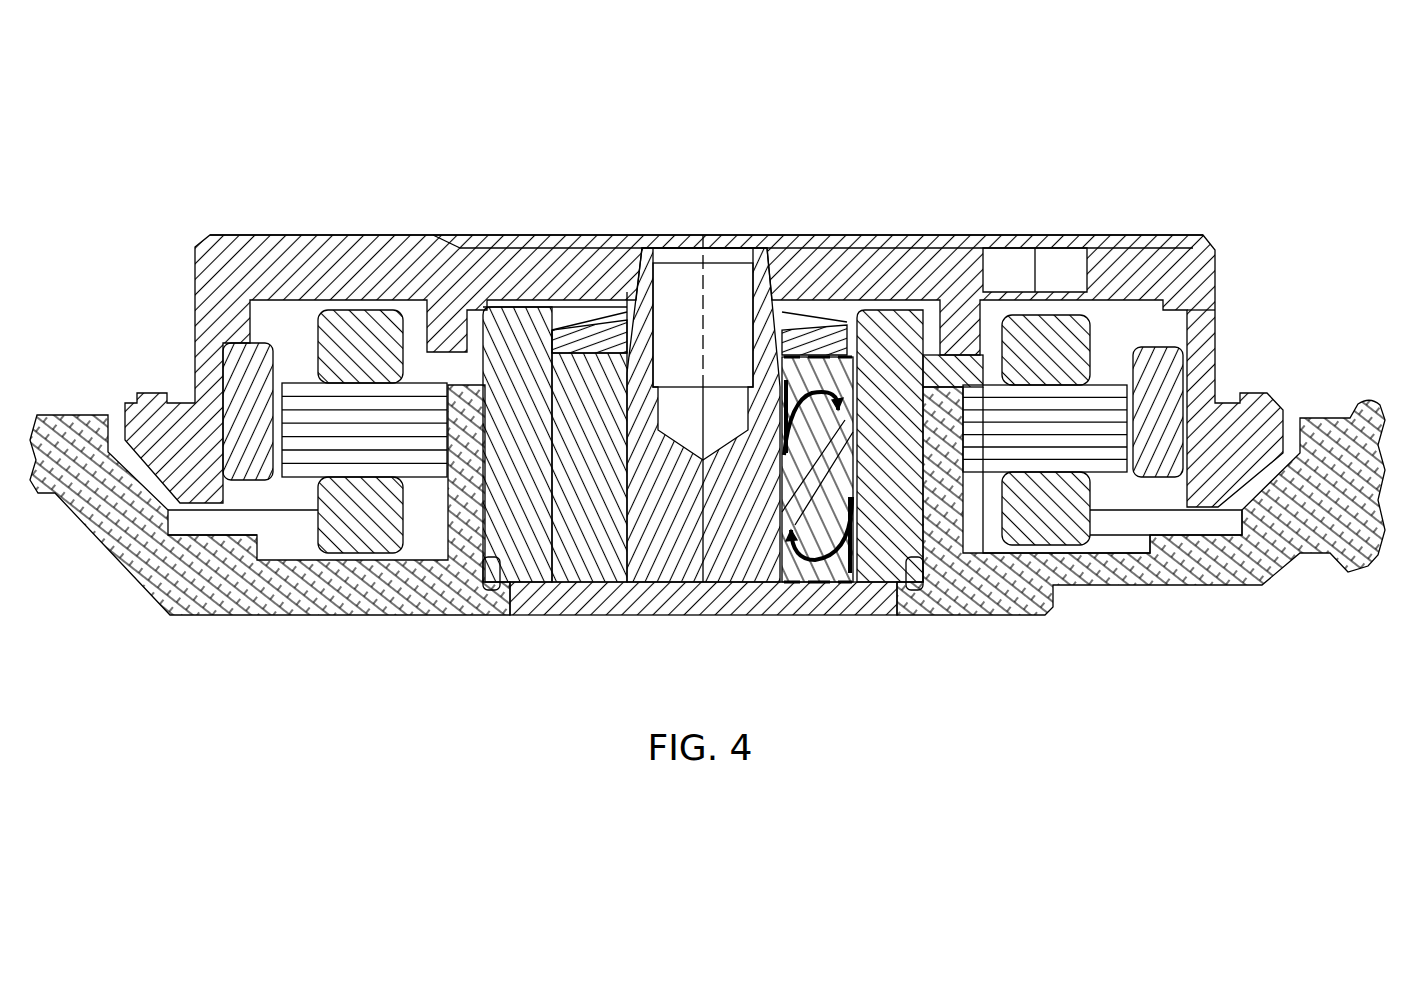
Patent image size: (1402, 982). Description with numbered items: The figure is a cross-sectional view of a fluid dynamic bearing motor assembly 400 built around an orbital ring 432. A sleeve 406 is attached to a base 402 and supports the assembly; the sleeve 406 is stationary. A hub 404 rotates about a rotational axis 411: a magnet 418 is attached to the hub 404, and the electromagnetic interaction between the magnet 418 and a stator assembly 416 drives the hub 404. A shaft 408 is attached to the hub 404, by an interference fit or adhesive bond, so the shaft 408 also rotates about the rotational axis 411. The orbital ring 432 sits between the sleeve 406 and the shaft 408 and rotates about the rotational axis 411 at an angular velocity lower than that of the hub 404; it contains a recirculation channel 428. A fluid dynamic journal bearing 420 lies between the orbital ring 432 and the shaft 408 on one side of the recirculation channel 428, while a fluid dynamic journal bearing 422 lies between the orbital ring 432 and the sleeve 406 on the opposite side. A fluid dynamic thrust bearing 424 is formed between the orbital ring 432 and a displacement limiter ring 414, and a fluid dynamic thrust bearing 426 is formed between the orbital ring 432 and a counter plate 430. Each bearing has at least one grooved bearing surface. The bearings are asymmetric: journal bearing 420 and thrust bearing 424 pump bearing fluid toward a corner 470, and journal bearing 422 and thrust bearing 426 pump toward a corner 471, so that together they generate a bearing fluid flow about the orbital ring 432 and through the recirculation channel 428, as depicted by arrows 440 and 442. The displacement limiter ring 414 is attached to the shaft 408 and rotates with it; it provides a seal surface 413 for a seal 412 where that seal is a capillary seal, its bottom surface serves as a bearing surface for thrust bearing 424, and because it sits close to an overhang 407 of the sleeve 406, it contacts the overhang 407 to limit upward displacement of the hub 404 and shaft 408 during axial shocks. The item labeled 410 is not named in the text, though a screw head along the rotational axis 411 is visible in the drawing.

The fluid dynamic bearing motor assembly 400 is at (192, 80).
The base 402 is at (88, 418).
The hub 404 is at (333, 235).
The sleeve 406 is at (503, 320).
The overhang 407 is at (575, 335).
The shaft 408 is at (636, 300).
The screw 410 is at (742, 290).
The rotational axis 411 is at (702, 300).
The seal 412 is at (790, 318).
The seal surface 413 is at (812, 335).
The displacement limiter ring 414 is at (600, 318).
The stator assembly 416 is at (1105, 370).
The magnet 418 is at (1175, 340).
The fluid dynamic journal bearing 420 is at (748, 520).
The fluid dynamic journal bearing 422 is at (910, 560).
The fluid dynamic thrust bearing 424 is at (870, 400).
The fluid dynamic thrust bearing 426 is at (815, 600).
The recirculation channel 428 is at (955, 570).
The counter plate 430 is at (645, 600).
The orbital ring 432 is at (588, 535).
The arrow 440 is at (900, 360).
The arrow 442 is at (803, 575).
The corner 470 is at (585, 343).
The corner 471 is at (578, 565).